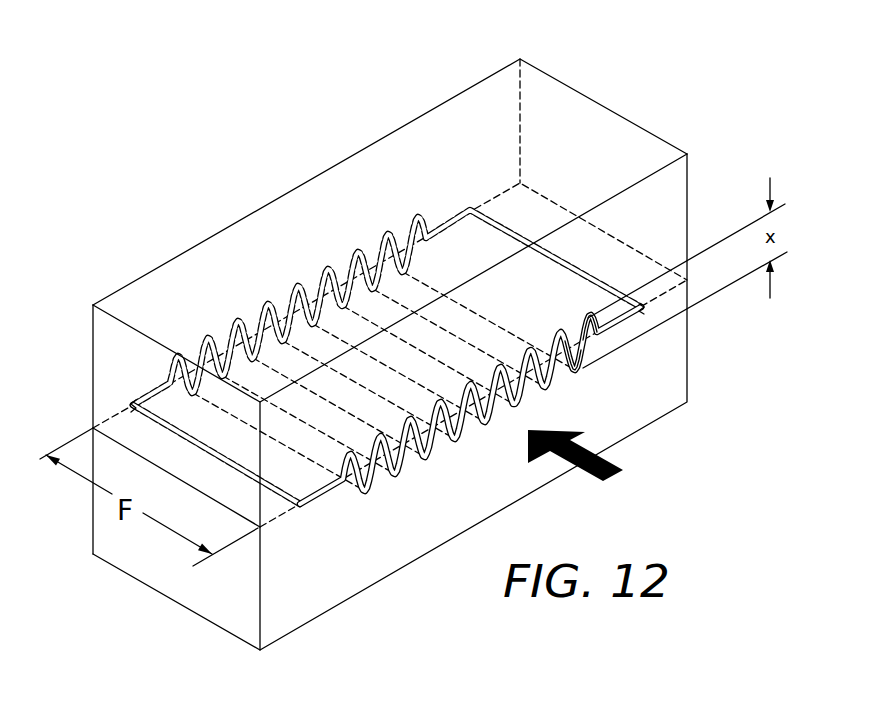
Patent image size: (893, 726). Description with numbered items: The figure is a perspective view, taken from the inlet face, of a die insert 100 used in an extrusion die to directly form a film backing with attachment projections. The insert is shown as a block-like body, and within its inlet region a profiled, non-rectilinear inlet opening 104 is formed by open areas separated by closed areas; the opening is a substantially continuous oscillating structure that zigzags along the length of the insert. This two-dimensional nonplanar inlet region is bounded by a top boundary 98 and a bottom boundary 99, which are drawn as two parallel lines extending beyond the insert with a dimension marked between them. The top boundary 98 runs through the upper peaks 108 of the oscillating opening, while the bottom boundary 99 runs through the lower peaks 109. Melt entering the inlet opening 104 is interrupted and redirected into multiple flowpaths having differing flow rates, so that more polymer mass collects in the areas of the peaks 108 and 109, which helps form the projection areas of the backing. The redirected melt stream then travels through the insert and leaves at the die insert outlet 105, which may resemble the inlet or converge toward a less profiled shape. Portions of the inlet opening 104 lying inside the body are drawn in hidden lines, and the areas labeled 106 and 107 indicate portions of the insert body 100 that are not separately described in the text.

The top boundary 98 is at (733, 235).
The bottom boundary 99 is at (727, 287).
The die insert 100 is at (453, 354).
The inlet opening 104 is at (347, 422).
The die insert outlet 105 is at (143, 393).
The lower portion of block 106 is at (691, 390).
The upper portion of block 107 is at (690, 170).
The peak 108 is at (588, 318).
The peak 109 is at (574, 371).